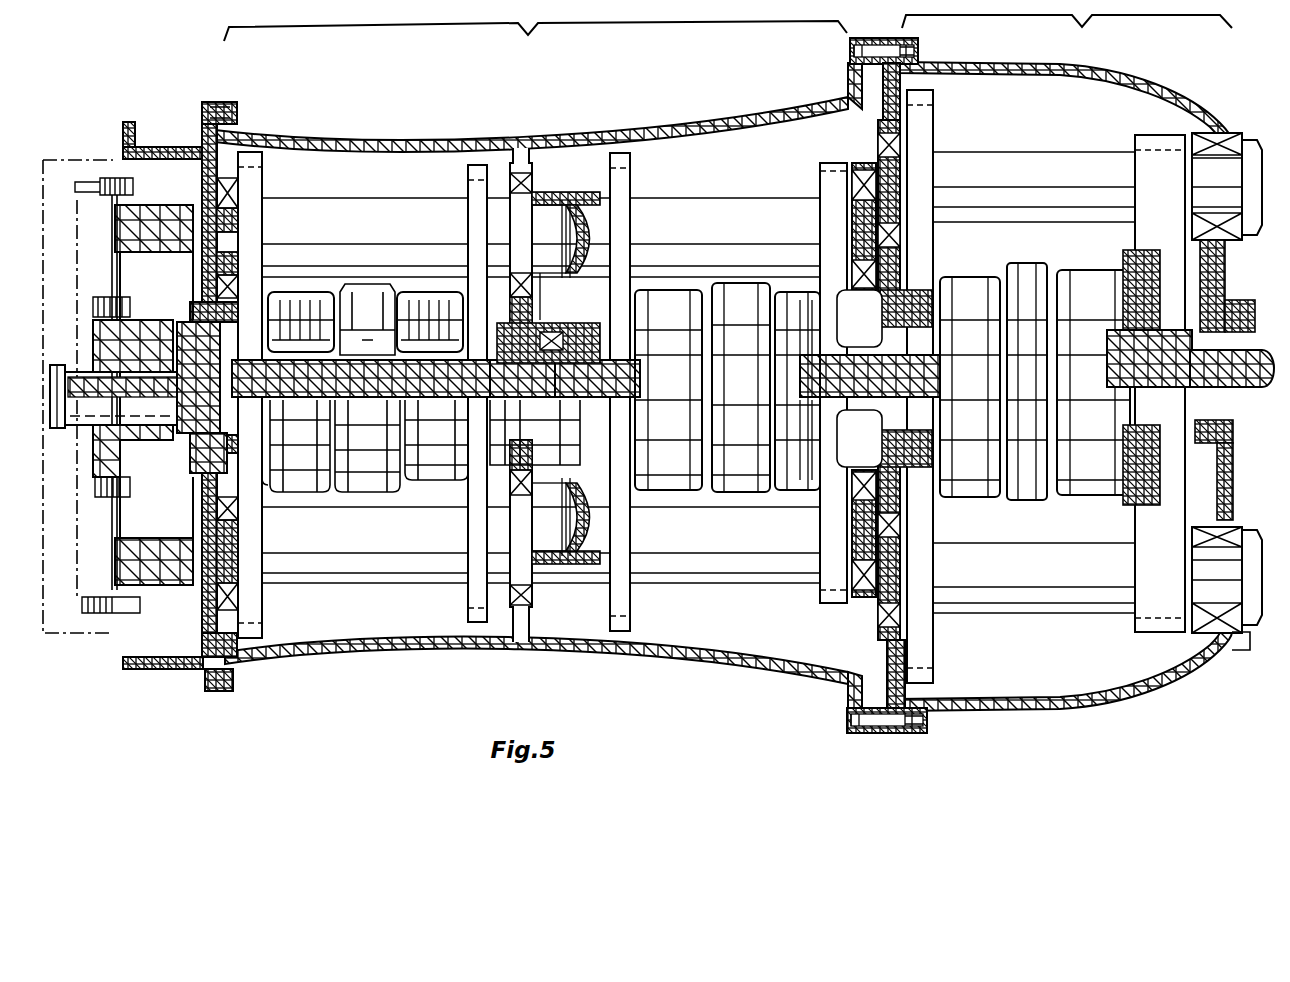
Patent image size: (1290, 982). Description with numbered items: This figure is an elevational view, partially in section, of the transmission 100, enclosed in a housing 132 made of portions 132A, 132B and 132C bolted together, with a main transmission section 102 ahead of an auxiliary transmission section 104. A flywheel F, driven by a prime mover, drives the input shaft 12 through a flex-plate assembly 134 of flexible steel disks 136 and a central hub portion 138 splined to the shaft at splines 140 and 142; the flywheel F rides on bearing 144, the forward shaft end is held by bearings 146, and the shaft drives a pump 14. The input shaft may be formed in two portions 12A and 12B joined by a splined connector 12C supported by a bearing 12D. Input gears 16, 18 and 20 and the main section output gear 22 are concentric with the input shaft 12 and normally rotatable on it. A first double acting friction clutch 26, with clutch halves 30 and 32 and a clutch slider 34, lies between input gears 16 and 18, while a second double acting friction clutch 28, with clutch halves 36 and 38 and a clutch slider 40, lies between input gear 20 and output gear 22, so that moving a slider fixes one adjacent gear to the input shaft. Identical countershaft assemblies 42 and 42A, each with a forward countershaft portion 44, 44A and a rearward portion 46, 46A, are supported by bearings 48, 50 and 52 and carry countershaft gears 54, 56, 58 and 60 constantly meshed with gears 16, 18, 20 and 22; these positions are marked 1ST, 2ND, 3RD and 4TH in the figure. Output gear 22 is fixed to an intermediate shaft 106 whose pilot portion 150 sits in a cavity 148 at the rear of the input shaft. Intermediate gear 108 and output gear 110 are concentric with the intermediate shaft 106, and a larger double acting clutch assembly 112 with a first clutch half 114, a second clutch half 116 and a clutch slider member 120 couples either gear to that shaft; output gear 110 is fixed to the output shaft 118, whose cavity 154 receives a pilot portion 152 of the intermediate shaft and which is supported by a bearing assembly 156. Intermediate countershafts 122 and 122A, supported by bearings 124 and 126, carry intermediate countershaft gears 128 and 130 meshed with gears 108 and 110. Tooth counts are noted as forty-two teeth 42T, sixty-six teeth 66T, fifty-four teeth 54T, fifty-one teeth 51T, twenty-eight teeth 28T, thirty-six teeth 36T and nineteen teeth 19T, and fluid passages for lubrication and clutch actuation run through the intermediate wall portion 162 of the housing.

The transmission 100 is at (172, 50).
The main transmission section 102 is at (538, 365).
The auxiliary transmission section 104 is at (1065, 363).
The flywheel F is at (56, 165).
The input shaft 12 is at (333, 389).
The input shaft portion 12A is at (497, 389).
The input shaft portion 12B is at (577, 389).
The splined connector 12C is at (548, 336).
The bearing 12D is at (535, 285).
The pump 14 is at (157, 392).
The input gear 16 is at (255, 412).
The input gear 18 is at (480, 433).
The input gear 20 is at (630, 412).
The main section output gear 22 is at (884, 378).
The first double acting friction clutch 26 is at (385, 493).
The second double acting friction clutch 28 is at (738, 500).
The twenty-eight teeth 28T is at (850, 556).
The clutch half 30 is at (303, 290).
The clutch half 32 is at (433, 290).
The clutch slider 34 is at (396, 290).
The clutch half 36 is at (666, 349).
The thirty-six teeth 36T is at (982, 482).
The clutch half 38 is at (794, 349).
The clutch slider 40 is at (738, 384).
The countershaft assembly 42 is at (371, 257).
The countershaft assembly 42A is at (388, 602).
The forty-two teeth 42T is at (275, 470).
The forward countershaft portion 44 is at (371, 234).
The forward countershaft portion 44A is at (333, 580).
The rearward countershaft portion 46 is at (691, 234).
The rearward countershaft portion 46A is at (660, 539).
The bearing 48 is at (233, 200).
The bearing 50 is at (527, 184).
The fifty-one teeth 51T is at (268, 470).
The bearing 52 is at (818, 182).
The countershaft gear 54 is at (250, 200).
The fifty-four teeth 54T is at (470, 480).
The countershaft gear 56 is at (472, 186).
The countershaft gear 58 is at (622, 174).
The countershaft gear 60 is at (848, 172).
The sixty-six teeth 66T is at (401, 491).
The intermediate shaft 106 is at (950, 395).
The intermediate gear 108 is at (930, 290).
The output gear 110 is at (1108, 369).
The double acting friction clutch assembly 112 is at (1045, 502).
The first clutch half 114 is at (1024, 506).
The second clutch half 116 is at (1083, 492).
The output shaft 118 is at (1212, 409).
The clutch slider member 120 is at (1020, 262).
The intermediate countershaft 122 is at (982, 182).
The intermediate countershaft 122A is at (982, 579).
The bearing 124 is at (876, 149).
The bearing 126 is at (1221, 135).
The intermediate countershaft gear 128 is at (916, 120).
The intermediate countershaft gear 130 is at (1150, 160).
The housing 132 is at (538, 386).
The housing portion 132A is at (157, 146).
The housing portion 132B is at (693, 126).
The housing portion 132C is at (962, 66).
The flex-plate assembly 134 is at (128, 282).
The flexible steel disks 136 is at (134, 300).
The central hub portion 138 is at (130, 348).
The splines 140 is at (110, 366).
The splines 142 is at (140, 396).
The bearing 144 is at (75, 432).
The bearings 146 is at (228, 400).
The cavity 148 is at (820, 405).
The pilot portion 150 is at (794, 391).
The pilot portion 152 is at (1158, 388).
The cavity 154 is at (1125, 390).
The bearing assembly 156 is at (1240, 330).
The intermediate wall portion 162 is at (515, 431).
The nineteen teeth 19T is at (1145, 590).
The first speed gear 1ST is at (262, 620).
The second speed gear 2ND is at (632, 611).
The third speed gear 3RD is at (478, 600).
The fourth speed gear 4TH is at (830, 598).